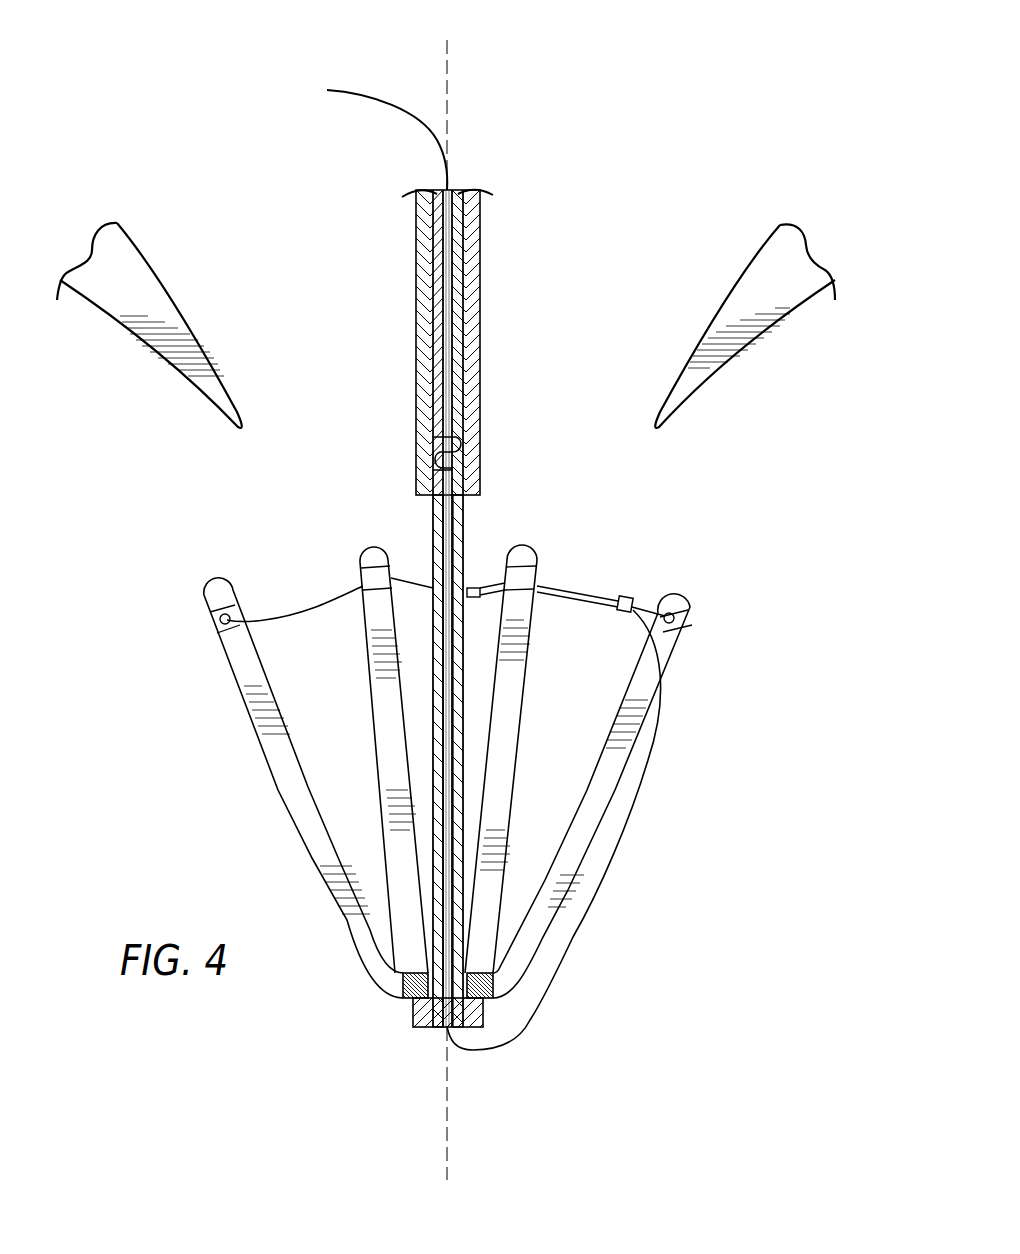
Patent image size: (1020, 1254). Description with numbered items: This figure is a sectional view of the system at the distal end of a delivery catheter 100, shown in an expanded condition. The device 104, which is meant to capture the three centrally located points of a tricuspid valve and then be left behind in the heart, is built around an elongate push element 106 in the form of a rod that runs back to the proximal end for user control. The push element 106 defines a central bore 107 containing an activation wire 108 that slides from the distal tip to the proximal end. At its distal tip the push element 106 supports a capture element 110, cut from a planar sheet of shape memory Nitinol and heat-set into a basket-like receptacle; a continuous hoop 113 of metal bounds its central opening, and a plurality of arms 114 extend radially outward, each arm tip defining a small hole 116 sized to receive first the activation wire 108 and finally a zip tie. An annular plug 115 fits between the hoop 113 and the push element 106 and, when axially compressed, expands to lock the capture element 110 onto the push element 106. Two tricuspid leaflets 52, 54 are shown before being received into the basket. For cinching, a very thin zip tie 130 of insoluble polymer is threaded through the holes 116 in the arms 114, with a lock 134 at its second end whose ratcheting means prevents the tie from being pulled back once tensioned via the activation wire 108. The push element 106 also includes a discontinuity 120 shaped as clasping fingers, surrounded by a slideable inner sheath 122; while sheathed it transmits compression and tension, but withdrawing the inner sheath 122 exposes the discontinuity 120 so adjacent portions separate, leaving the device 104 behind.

The tricuspid leaflet 52 is at (128, 296).
The tricuspid leaflet 54 is at (738, 308).
The delivery catheter 100 is at (600, 228).
The device 104 is at (160, 519).
The push element 106 is at (440, 876).
The central bore 107 is at (448, 538).
The activation wire 108 is at (395, 100).
The capture element 110 is at (690, 678).
The hoop 113 is at (485, 990).
The arms 114 is at (278, 742).
The annular plug 115 is at (422, 1016).
The hole 116 is at (221, 620).
The discontinuity 120 is at (448, 437).
The inner sheath 122 is at (478, 320).
The zip tie 130 is at (567, 596).
The lock 134 is at (628, 601).